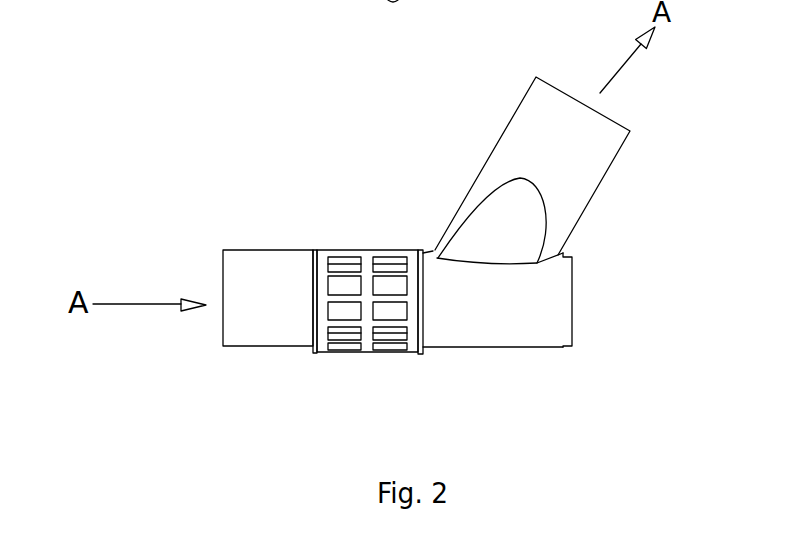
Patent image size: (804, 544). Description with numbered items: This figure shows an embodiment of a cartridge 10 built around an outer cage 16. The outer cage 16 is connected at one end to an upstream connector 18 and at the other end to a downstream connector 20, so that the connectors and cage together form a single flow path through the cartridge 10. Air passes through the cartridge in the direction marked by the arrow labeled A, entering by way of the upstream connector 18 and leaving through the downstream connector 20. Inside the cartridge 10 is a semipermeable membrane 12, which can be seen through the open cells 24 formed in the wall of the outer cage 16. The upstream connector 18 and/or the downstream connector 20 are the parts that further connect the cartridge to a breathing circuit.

The cartridge 10 is at (200, 169).
The semipermeable membrane 12 is at (388, 285).
The outer cage 16 is at (324, 348).
The upstream connector 18 is at (257, 343).
The downstream connector 20 is at (615, 162).
The open cells 24 is at (345, 288).